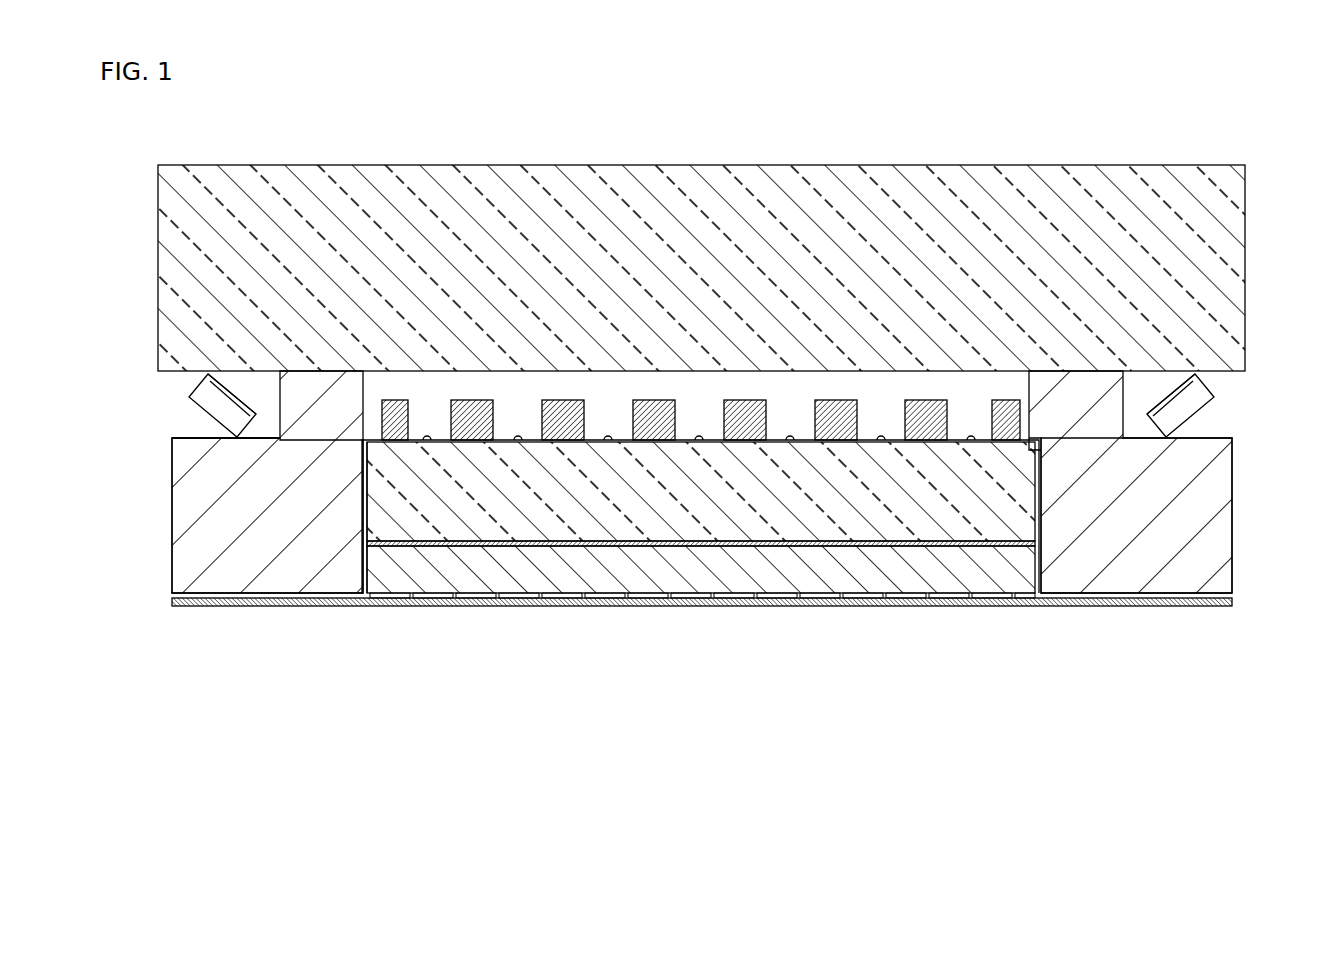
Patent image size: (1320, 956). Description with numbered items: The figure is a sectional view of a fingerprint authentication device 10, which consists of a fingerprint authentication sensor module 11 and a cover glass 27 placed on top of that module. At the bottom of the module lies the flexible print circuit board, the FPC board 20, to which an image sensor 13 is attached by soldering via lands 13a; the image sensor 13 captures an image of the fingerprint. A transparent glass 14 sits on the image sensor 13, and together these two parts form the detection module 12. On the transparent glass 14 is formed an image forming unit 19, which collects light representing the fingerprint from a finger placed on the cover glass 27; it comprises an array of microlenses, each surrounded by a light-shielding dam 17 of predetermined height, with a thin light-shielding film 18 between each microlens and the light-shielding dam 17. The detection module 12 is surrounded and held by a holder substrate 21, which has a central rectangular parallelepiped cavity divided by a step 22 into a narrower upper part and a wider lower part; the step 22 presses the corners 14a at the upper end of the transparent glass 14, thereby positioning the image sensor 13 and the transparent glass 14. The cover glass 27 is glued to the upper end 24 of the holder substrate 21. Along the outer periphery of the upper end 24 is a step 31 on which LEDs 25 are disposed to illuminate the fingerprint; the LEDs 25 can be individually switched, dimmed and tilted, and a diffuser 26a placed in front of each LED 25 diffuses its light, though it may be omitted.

The fingerprint authentication device 10 is at (858, 128).
The fingerprint authentication sensor module 11 is at (932, 393).
The detection module 12 is at (421, 648).
The image sensor 13 is at (869, 578).
The lands 13a is at (976, 599).
The transparent glass 14 is at (444, 513).
The corners 14a is at (362, 437).
The light-shielding dam 17 is at (562, 405).
The light-shielding film 18 is at (616, 438).
The image forming unit 19 is at (704, 422).
The FPC board 20 is at (1113, 601).
The holder substrate 21 is at (1215, 530).
The step 22 is at (1040, 444).
The upper end 24 is at (304, 371).
The LEDs 25 is at (212, 412).
The diffuser 26a is at (207, 375).
The cover glass 27 is at (596, 181).
The step 31 is at (210, 431).